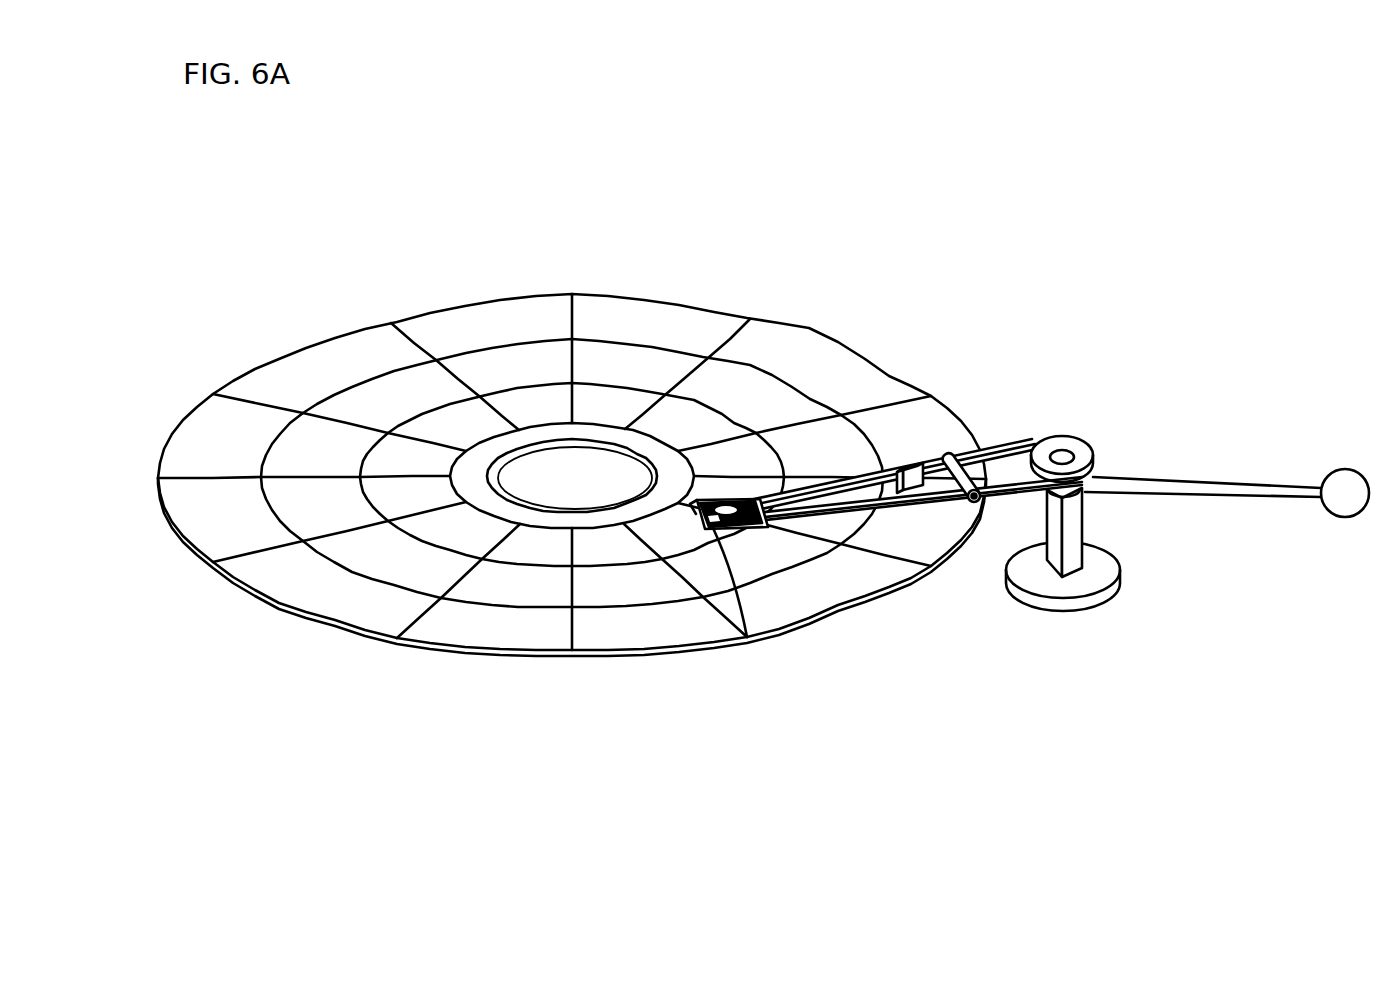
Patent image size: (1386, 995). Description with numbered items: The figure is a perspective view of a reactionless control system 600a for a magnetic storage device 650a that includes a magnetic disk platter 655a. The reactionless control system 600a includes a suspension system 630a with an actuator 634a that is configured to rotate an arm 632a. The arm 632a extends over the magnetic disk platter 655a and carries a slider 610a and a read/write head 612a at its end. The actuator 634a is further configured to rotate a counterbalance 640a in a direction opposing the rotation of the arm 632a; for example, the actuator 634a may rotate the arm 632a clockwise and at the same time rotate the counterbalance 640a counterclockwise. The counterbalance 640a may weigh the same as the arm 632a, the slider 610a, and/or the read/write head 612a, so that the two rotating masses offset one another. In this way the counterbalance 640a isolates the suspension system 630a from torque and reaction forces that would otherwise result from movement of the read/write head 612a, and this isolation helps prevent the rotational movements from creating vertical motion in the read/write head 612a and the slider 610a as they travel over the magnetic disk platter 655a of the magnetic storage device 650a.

The reactionless control system 600a is at (1029, 545).
The slider 610a is at (847, 606).
The read/write head 612a is at (753, 524).
The suspension system 630a is at (1140, 531).
The arm 632a is at (1002, 443).
The actuator 634a is at (1064, 455).
The counterbalance 640a is at (1345, 469).
The magnetic storage device 650a is at (572, 527).
The magnetic disk platter 655a is at (813, 325).